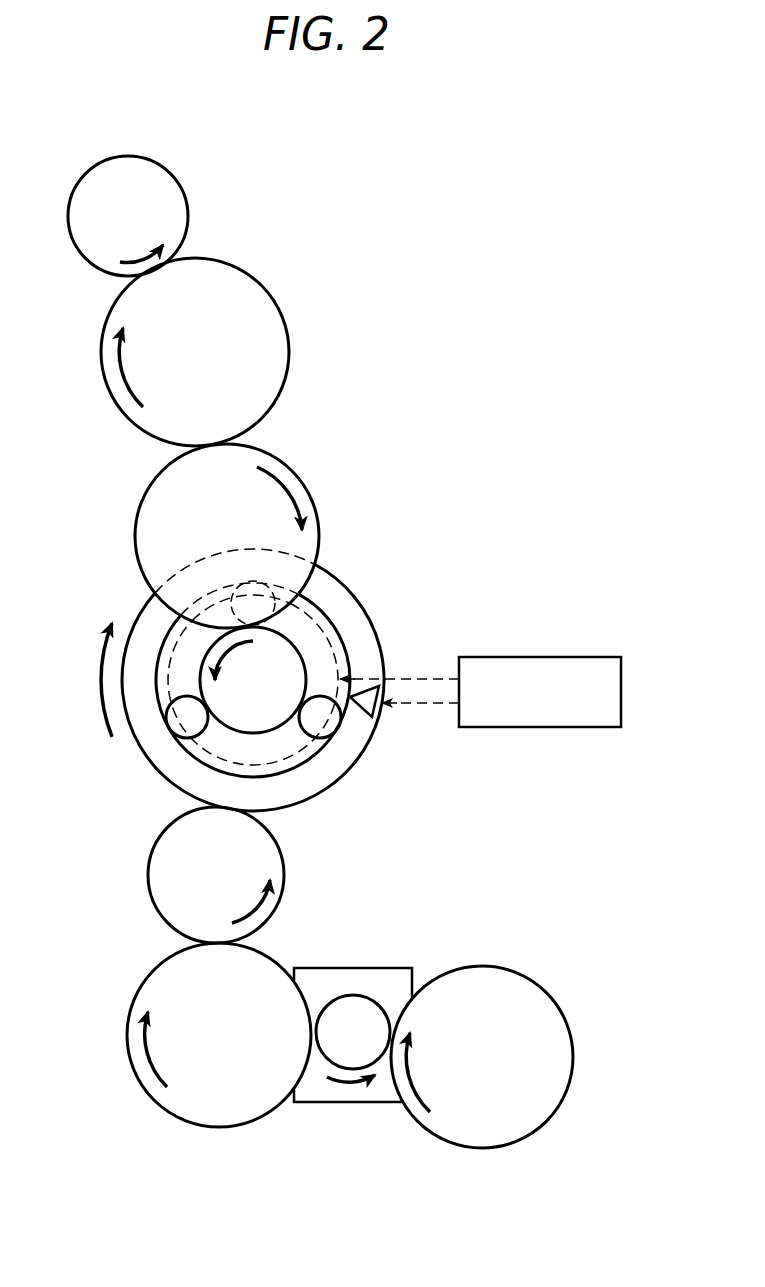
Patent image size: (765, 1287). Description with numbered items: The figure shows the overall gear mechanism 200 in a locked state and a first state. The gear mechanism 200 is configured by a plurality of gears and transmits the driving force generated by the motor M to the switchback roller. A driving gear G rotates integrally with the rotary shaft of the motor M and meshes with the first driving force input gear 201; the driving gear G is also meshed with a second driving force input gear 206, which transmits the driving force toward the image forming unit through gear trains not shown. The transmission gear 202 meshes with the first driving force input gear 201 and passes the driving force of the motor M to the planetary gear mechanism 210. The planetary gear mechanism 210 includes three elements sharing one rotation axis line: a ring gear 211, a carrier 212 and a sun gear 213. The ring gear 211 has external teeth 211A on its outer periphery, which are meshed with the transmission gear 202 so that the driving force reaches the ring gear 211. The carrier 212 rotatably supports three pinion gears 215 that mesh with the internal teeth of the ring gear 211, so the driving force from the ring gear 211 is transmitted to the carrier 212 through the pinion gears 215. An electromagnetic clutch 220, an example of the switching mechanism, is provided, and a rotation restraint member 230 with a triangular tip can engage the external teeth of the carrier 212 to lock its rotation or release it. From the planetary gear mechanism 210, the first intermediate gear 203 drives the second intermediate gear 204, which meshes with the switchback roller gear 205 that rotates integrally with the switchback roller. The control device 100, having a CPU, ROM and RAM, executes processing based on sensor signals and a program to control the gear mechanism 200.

The gear mechanism 200 is at (544, 236).
The first driving force input gear 201 is at (215, 1113).
The transmission gear 202 is at (162, 895).
The first intermediate gear 203 is at (293, 480).
The second intermediate gear 204 is at (258, 295).
The switchback roller gear 205 is at (172, 188).
The second driving force input gear 206 is at (518, 1127).
The planetary gear mechanism 210 is at (126, 602).
The ring gear 211 is at (208, 684).
The external teeth 211A is at (157, 768).
The carrier 212 is at (200, 758).
The sun gear 213 is at (167, 711).
The pinion gears 215 is at (270, 588).
The electromagnetic clutch 220 is at (335, 653).
The rotation restraint member 230 is at (378, 713).
The control device 100 is at (562, 657).
The driving gear G is at (328, 1052).
The motor M is at (352, 1095).